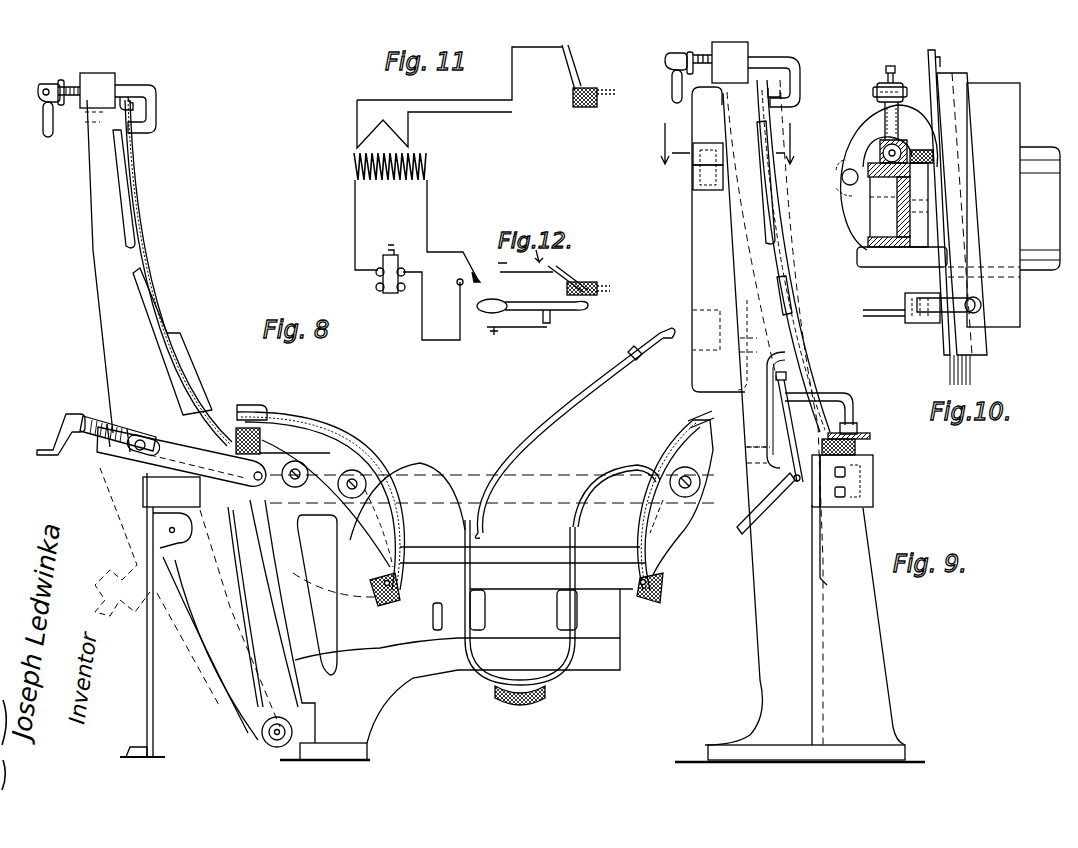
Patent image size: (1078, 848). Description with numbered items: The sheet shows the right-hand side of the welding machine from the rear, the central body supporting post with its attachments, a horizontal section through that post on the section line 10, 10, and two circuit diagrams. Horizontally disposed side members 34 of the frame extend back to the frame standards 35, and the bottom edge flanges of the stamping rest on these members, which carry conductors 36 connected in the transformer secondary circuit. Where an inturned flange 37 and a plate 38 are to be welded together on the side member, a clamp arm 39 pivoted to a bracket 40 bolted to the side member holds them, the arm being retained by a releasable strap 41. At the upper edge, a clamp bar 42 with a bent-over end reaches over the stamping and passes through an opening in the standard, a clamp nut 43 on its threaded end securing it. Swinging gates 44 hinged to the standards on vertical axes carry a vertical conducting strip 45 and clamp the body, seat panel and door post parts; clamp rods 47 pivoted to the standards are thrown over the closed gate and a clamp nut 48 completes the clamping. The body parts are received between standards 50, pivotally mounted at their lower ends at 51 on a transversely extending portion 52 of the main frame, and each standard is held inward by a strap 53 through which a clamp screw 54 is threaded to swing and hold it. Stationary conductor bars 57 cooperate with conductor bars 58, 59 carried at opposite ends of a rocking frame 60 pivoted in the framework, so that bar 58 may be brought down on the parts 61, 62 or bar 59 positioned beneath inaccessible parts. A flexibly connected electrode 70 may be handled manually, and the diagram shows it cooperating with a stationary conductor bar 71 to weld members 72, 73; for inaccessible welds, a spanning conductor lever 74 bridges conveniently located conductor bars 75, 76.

In FIG. 9, the section line 10 10 is at (728, 144).
In FIG. 9, the side members 34 is at (817, 507).
In FIG. 9, the frame standards 35 is at (738, 285).
In FIG. 10, the frame standards 35 is at (900, 222).
In FIG. 10, the conductors 36 is at (972, 366).
In FIG. 9, the inturned flange 37 is at (858, 445).
In FIG. 10, the inturned flange 37 is at (940, 57).
In FIG. 9, the plate 38 is at (862, 430).
In FIG. 10, the plate 38 is at (966, 166).
In FIG. 9, the clamp arm 39 is at (840, 390).
In FIG. 10, the clamp arm 39 is at (890, 304).
In FIG. 9, the bracket 40 is at (788, 500).
In FIG. 9, the releasable strap 41 is at (768, 410).
In FIG. 10, the releasable strap 41 is at (902, 267).
In FIG. 8, the clamp bar 42 is at (148, 90).
In FIG. 9, the clamp bar 42 is at (770, 58).
In FIG. 8, the clamp nut 43 is at (56, 80).
In FIG. 9, the clamp nut 43 is at (672, 58).
In FIG. 9, the swinging gates 44 is at (690, 257).
In FIG. 10, the swinging gates 44 is at (858, 126).
In FIG. 10, the vertical conducting strip 45 is at (918, 150).
In FIG. 10, the clamp rods 47 is at (884, 72).
In FIG. 10, the clamp nut 48 is at (873, 88).
In FIG. 8, the standards 50 is at (108, 352).
In FIG. 8, the pivot 51 is at (262, 735).
In FIG. 8, the transversely extending portion of the main frame 52 is at (455, 668).
In FIG. 8, the strap 53 is at (97, 452).
In FIG. 8, the clamp screw 54 is at (94, 415).
In FIG. 8, the stationary conductor bars 57 is at (280, 453).
In FIG. 8, the conductor bar 58 is at (240, 410).
In FIG. 8, the conductor bar 59 is at (383, 600).
In FIG. 8, the rocking frame 60 is at (355, 445).
In FIG. 8, the part to be welded 61 is at (285, 418).
In FIG. 8, the part to be welded 62 is at (265, 436).
In FIG. 8, the electrode 70 is at (575, 385).
In FIG. 11, the electrode 70 is at (572, 62).
In FIG. 11, the stationary conductor bar 71 is at (592, 106).
In FIG. 11, the member 72 is at (596, 85).
In FIG. 11, the member 73 is at (610, 95).
In FIG. 12, the spanning conductor lever 74 is at (575, 308).
In FIG. 12, the conductor bar 75 is at (548, 323).
In FIG. 12, the conductor bar 76 is at (592, 283).